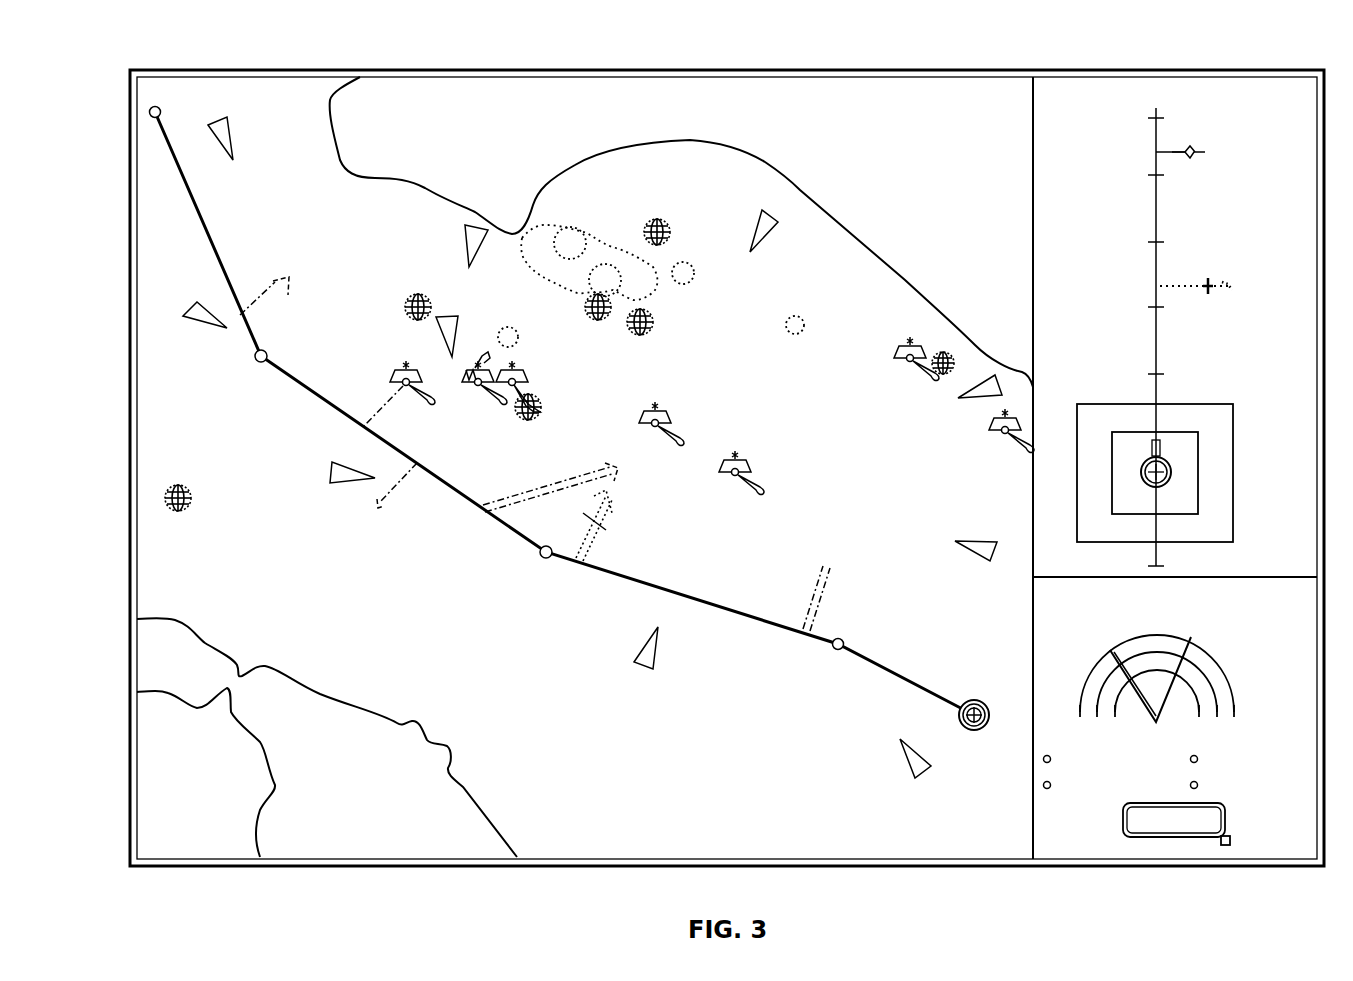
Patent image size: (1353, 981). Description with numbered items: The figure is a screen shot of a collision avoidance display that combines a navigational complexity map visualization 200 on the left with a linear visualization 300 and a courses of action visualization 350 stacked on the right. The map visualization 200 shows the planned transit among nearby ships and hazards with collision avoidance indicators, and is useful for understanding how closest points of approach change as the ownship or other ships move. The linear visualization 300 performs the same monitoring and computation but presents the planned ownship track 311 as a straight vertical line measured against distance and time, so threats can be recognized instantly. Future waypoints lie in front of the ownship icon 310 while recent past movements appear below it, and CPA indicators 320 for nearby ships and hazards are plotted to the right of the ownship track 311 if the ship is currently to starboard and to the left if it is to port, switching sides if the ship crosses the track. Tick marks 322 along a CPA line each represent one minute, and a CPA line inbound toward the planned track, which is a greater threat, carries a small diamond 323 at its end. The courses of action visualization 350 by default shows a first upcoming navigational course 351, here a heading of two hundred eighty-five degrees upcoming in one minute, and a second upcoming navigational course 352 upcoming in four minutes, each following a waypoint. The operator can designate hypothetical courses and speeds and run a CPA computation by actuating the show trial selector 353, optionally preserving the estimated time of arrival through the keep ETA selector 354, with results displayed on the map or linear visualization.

The map visualization 200 is at (226, 56).
The linear visualization 300 is at (1052, 212).
The ownship icon 310 is at (1171, 470).
The ownship track 311 is at (1158, 356).
The CPA indicator 320 is at (1175, 150).
The tick marks 322 is at (1212, 283).
The small diamond 323 is at (1192, 154).
The courses of action visualization 350 is at (1016, 778).
The first upcoming navigational course 351 is at (1200, 700).
The second upcoming navigational course 352 is at (1133, 665).
The show trial selector 353 is at (1177, 840).
The keep ETA selector 354 is at (1227, 848).